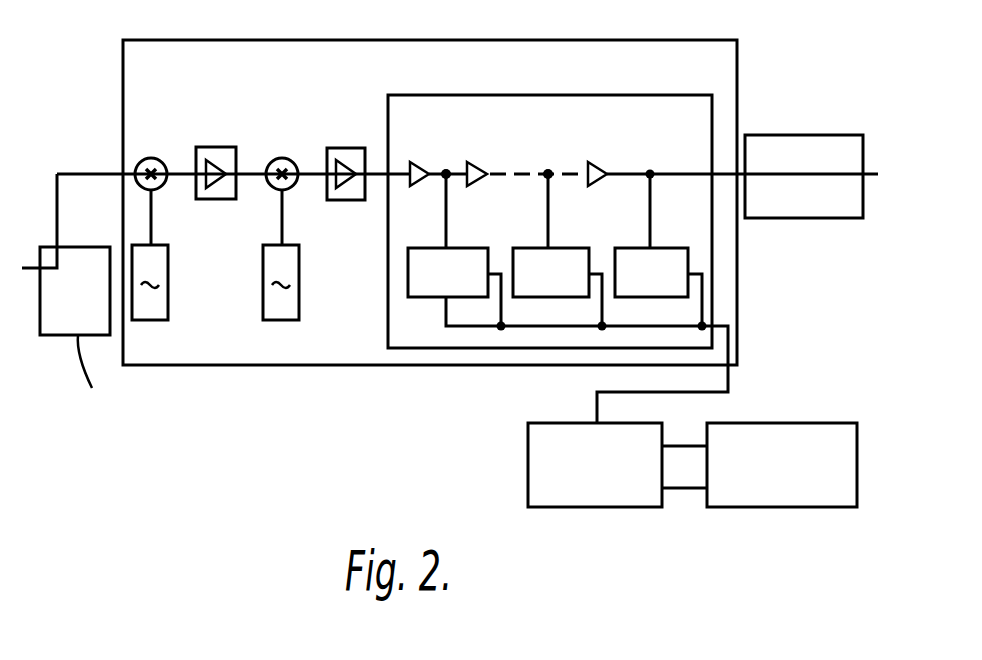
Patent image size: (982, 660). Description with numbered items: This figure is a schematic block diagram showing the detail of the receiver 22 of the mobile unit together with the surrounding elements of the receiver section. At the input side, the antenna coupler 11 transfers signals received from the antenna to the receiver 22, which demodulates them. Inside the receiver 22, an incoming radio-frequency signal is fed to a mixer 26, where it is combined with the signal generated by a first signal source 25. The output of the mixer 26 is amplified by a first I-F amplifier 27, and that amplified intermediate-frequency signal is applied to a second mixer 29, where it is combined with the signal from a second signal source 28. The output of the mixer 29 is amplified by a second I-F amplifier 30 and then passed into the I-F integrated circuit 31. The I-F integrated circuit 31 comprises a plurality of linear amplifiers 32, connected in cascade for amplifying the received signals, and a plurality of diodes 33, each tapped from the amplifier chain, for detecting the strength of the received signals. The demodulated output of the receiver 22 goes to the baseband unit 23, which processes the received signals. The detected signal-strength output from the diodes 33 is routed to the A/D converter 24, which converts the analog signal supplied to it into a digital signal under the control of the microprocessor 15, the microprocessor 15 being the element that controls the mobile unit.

The antenna coupler 11 is at (82, 247).
The microprocessor 15 is at (815, 423).
The receiver 22 is at (686, 40).
The baseband unit 23 is at (815, 133).
The A/D converter 24 is at (563, 423).
The first signal source 25 is at (168, 262).
The mixer 26 is at (157, 157).
The first I-F amplifier 27 is at (222, 147).
The second signal source 28 is at (299, 268).
The mixer 29 is at (287, 157).
The second I-F amplifier 30 is at (344, 148).
The I-F integrated circuit 31 is at (423, 95).
The linear amplifiers 32 is at (452, 160).
The diodes 33 is at (562, 220).